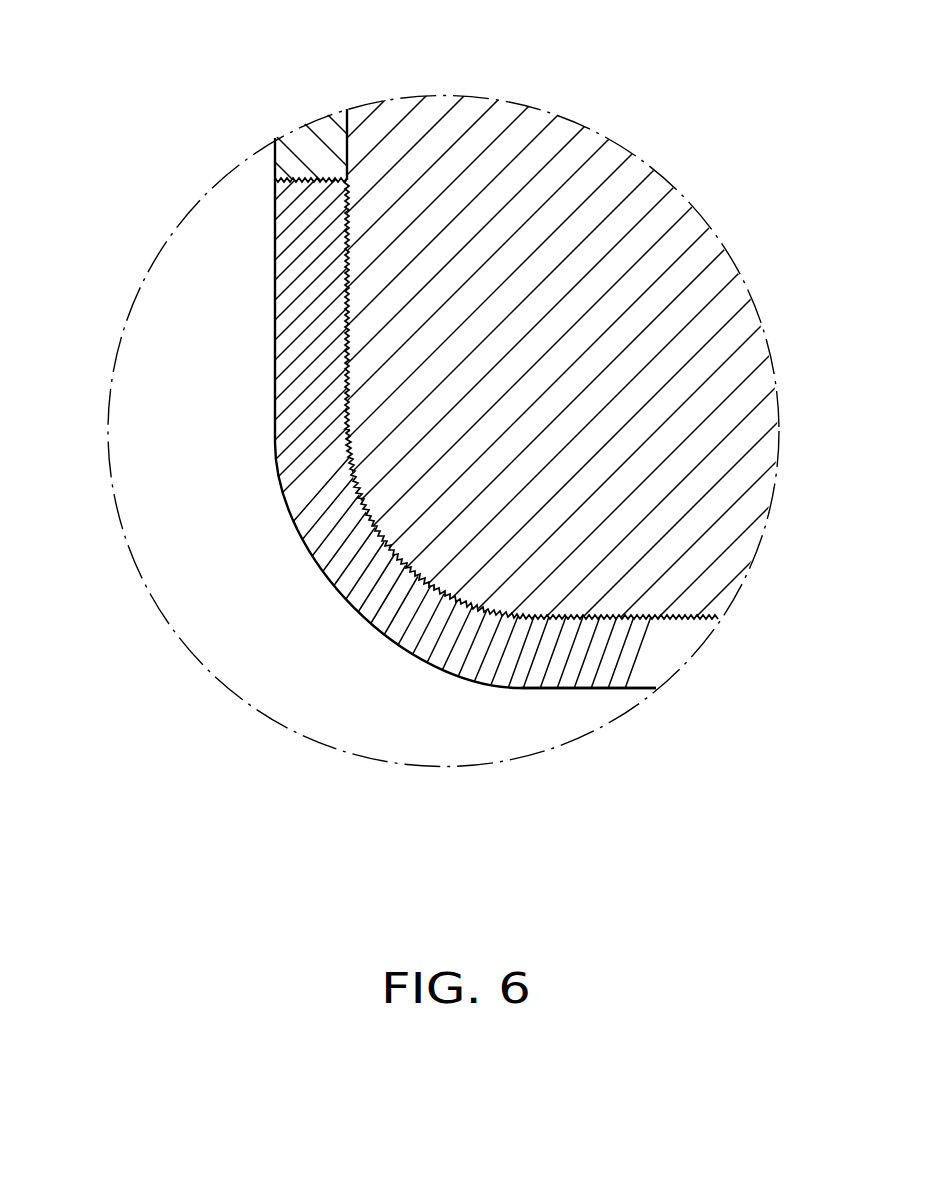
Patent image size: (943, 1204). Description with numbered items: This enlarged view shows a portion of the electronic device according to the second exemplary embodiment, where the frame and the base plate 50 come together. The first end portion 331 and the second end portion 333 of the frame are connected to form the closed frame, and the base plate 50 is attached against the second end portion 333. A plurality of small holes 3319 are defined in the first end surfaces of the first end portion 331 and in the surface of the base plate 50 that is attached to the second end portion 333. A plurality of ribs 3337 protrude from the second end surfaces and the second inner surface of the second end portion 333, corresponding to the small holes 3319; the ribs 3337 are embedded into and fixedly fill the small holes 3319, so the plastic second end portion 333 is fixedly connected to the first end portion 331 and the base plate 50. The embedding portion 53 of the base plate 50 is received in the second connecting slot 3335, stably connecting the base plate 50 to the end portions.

The base plate 50 is at (628, 208).
The embedding portion 53 is at (664, 624).
The first end portion 331 is at (309, 147).
The second end portion 333 is at (297, 277).
The small holes 3319 is at (345, 212).
The second connecting slot 3335 is at (659, 624).
The ribs 3337 is at (345, 295).